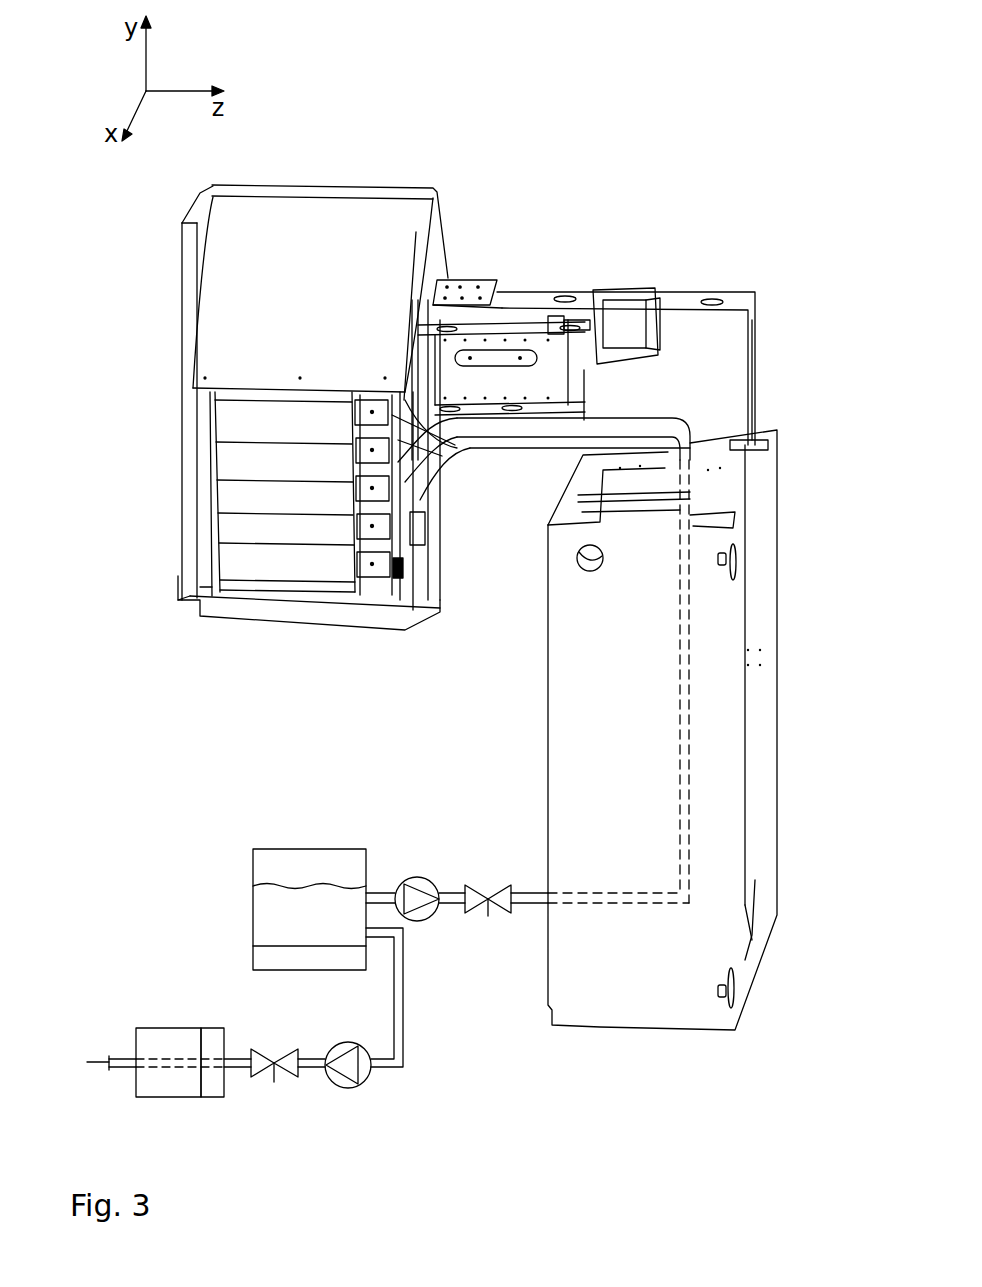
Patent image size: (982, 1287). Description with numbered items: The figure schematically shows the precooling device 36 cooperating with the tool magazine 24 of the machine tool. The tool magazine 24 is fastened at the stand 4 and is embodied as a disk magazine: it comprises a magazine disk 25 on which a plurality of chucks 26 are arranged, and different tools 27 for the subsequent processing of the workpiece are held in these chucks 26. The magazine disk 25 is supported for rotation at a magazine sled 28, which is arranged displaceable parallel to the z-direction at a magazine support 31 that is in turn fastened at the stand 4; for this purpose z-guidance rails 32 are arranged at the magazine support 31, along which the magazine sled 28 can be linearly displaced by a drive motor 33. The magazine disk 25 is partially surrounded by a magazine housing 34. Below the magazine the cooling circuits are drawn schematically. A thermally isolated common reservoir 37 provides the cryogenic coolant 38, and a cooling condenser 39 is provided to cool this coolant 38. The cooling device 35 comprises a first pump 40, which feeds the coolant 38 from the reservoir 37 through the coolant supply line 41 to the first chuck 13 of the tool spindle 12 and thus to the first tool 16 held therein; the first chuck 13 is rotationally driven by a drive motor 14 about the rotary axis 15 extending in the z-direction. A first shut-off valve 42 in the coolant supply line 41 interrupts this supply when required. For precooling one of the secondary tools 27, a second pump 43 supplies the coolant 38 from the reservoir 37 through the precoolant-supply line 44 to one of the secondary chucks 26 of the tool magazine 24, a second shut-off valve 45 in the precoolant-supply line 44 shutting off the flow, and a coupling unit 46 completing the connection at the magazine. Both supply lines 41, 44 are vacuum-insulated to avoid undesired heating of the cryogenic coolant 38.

The stand 4 is at (776, 525).
The tool spindle 12 is at (186, 1063).
The first chuck 13 is at (168, 1090).
The drive motor 14 is at (210, 1090).
The rotary axis 15 is at (93, 1064).
The first tool 16 is at (114, 1057).
The tool magazine 24 is at (473, 407).
The magazine disk 25 is at (440, 463).
The chucks 26 is at (387, 420).
The tools 27 is at (313, 540).
The magazine sled 28 is at (537, 345).
The magazine support 31 is at (710, 318).
The z-guidance rails 32 is at (470, 330).
The drive motor 33 is at (637, 315).
The magazine housing 34 is at (353, 208).
The cooling device 35 is at (316, 967).
The precooling device 36 is at (457, 838).
The reservoir 37 is at (253, 866).
The cryogenic coolant 38 is at (258, 897).
The cooling condenser 39 is at (258, 955).
The first pump 40 is at (345, 1088).
The coolant supply line 41 is at (386, 1065).
The first shut-off valve 42 is at (262, 1066).
The second pump 43 is at (420, 878).
The precoolant-supply line 44 is at (497, 440).
The second shut-off valve 45 is at (487, 883).
The coupling unit 46 is at (396, 590).